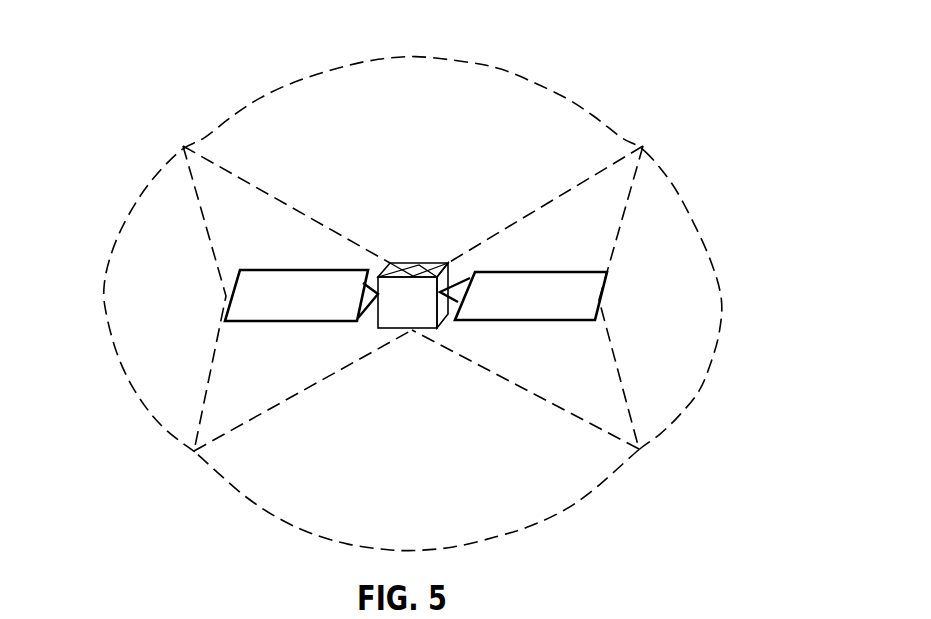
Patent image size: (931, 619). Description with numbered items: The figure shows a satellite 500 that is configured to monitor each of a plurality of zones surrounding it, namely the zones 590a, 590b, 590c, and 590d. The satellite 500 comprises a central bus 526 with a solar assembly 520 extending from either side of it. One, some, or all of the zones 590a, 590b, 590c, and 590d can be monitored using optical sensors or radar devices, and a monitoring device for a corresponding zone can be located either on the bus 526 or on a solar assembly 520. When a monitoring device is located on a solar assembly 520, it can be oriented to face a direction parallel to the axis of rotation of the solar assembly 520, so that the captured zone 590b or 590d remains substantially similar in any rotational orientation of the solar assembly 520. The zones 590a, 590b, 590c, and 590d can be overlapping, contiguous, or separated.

The satellite 500 is at (283, 256).
The solar assembly 520 is at (279, 310).
The bus 526 is at (414, 262).
The zone 590a is at (474, 75).
The zone 590b is at (707, 294).
The zone 590c is at (520, 513).
The zone 590d is at (120, 260).